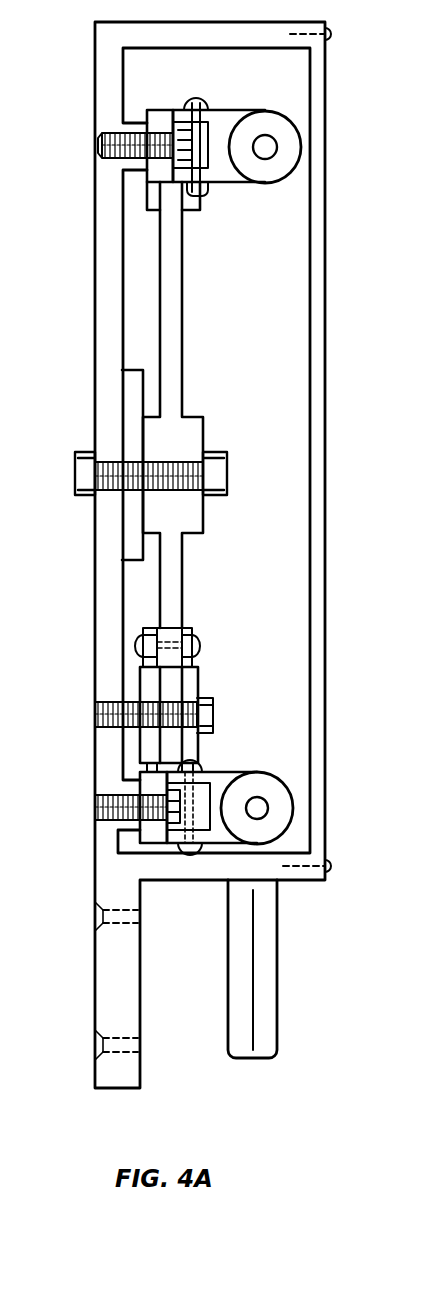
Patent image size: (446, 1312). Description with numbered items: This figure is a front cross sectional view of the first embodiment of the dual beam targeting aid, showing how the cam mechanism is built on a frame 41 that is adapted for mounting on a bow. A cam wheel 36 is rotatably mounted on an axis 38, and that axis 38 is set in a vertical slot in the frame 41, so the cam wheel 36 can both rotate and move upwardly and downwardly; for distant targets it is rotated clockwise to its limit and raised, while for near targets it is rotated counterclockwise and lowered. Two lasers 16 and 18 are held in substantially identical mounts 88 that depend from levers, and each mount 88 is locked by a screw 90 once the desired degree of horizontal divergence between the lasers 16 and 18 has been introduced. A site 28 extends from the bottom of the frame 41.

The laser 16 is at (265, 110).
The laser 18 is at (267, 773).
The site 28 is at (278, 968).
The cam wheel 36 is at (183, 353).
The axis 38 is at (75, 470).
The frame 41 is at (95, 312).
The mount 88 is at (227, 110).
The screw 90 is at (190, 103).